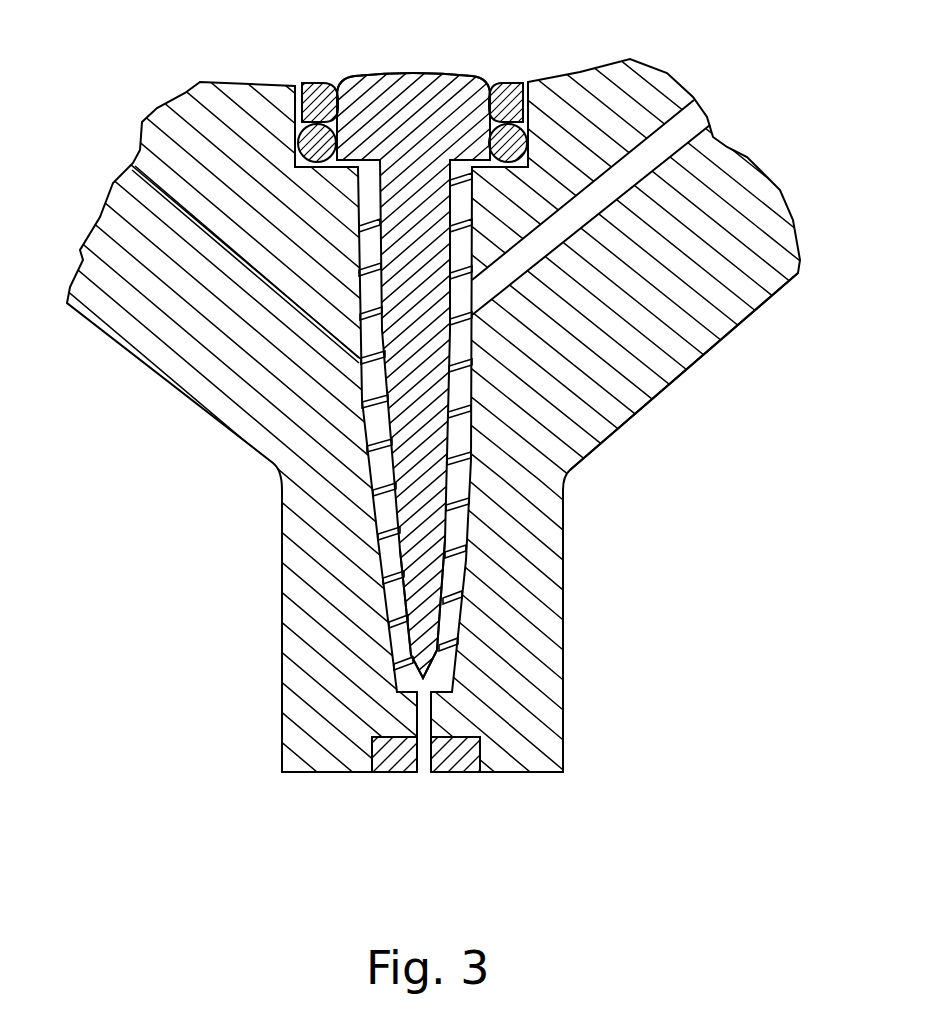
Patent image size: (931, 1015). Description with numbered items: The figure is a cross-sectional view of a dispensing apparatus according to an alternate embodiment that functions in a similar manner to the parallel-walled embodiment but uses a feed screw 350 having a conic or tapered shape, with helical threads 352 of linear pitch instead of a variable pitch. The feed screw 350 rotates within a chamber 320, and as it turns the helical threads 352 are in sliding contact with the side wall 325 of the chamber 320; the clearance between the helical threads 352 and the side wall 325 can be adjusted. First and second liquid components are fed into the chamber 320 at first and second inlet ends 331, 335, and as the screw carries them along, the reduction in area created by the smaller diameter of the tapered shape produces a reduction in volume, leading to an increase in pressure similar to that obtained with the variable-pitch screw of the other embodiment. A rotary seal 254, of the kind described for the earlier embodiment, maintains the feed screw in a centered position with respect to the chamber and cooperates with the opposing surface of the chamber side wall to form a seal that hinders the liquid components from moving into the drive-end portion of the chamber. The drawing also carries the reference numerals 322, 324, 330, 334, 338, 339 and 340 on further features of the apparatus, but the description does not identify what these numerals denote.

The rotary seal 254 is at (340, 118).
The chamber 320 is at (383, 518).
The valve head 322 is at (373, 87).
The channel bottom 324 is at (440, 676).
The side wall 325 is at (430, 477).
The passage 330 is at (233, 278).
The first inlet end 331 is at (337, 365).
The inlet passage 334 is at (697, 128).
The second inlet end 335 is at (527, 260).
The outlet orifice 338 is at (418, 718).
The orifice plate 339 is at (462, 760).
The housing 340 is at (597, 400).
The feed screw 350 is at (430, 550).
The helical threads 352 is at (388, 658).